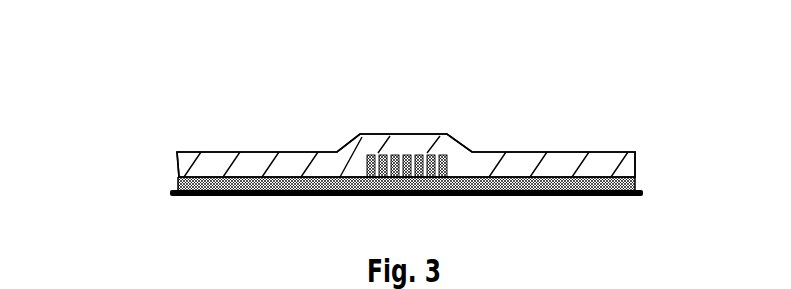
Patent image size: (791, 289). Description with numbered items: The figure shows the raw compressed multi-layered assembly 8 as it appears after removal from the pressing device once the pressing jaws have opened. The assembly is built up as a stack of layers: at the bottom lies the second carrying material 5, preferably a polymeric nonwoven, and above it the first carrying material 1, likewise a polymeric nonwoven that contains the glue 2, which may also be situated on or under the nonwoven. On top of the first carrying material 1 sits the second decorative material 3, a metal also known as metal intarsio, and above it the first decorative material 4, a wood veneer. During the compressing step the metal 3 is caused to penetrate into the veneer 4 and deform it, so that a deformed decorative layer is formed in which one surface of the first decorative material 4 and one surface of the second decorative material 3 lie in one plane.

The first carrying material 1 is at (178, 182).
The glue 2 is at (406, 155).
The second decorative material 3 is at (409, 157).
The first decorative material 4 is at (634, 159).
The second carrying material 5 is at (645, 193).
The multi-layered assembly 8 is at (560, 101).